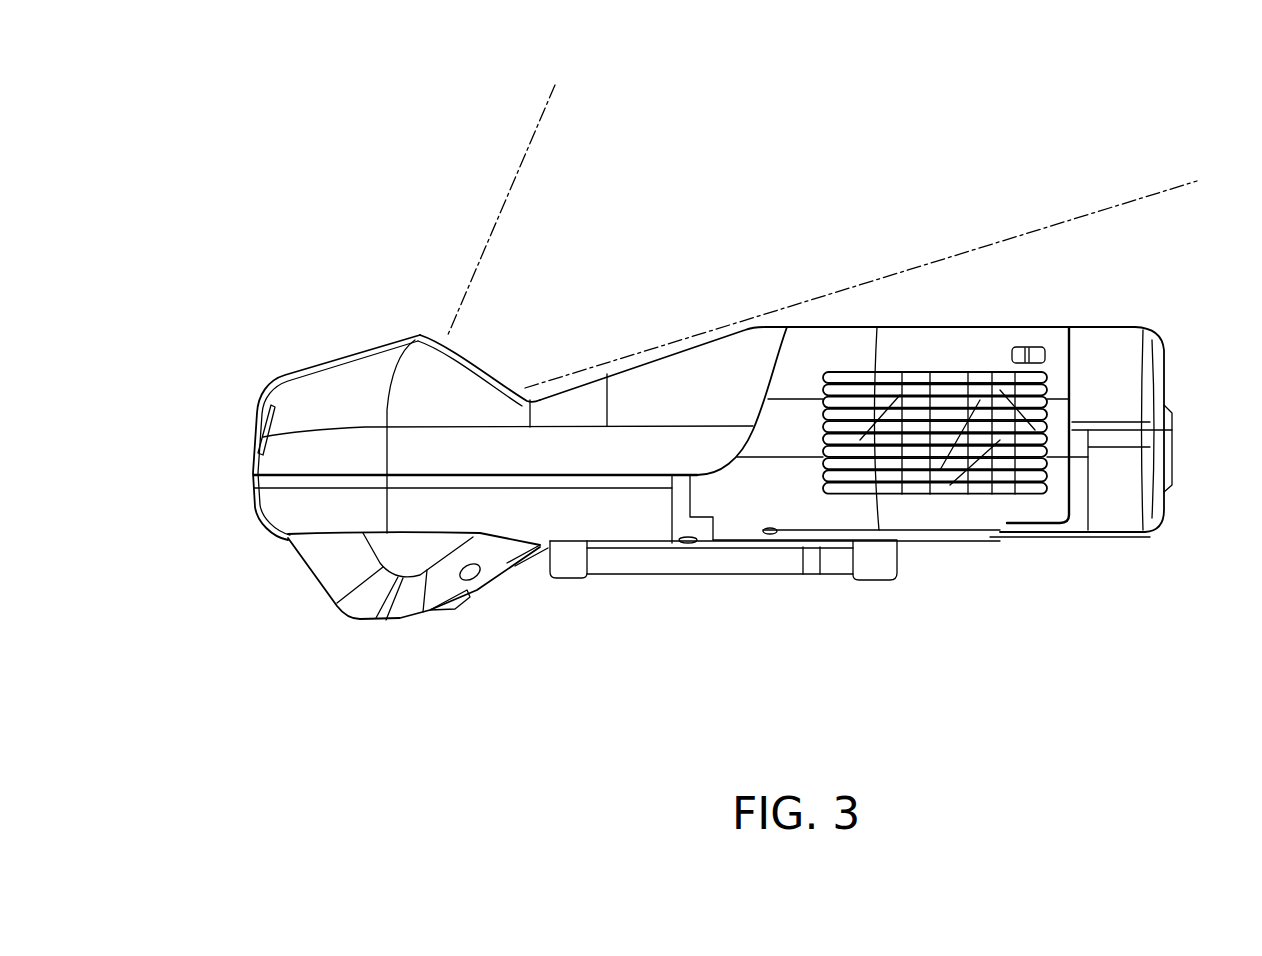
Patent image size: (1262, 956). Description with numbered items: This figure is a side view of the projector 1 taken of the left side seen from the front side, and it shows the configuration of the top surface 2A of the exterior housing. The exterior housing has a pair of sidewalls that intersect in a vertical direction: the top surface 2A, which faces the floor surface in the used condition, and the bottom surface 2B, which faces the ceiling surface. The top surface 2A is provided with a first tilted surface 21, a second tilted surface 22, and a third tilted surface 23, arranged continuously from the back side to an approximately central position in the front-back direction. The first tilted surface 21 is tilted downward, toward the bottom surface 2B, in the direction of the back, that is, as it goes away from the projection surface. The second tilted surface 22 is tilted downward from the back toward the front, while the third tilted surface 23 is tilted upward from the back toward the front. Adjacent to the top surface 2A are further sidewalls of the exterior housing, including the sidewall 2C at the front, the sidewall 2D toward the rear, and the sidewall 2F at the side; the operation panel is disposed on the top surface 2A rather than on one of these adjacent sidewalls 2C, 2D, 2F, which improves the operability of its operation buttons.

The projector 1 is at (306, 155).
The first tilted surface 21 is at (348, 360).
The second tilted surface 22 is at (473, 363).
The third tilted surface 23 is at (686, 345).
The top surface 2A is at (1000, 327).
The bottom surface 2B is at (752, 580).
The sidewall 2C is at (257, 463).
The sidewall 2D is at (1117, 515).
The sidewall 2F is at (1168, 382).